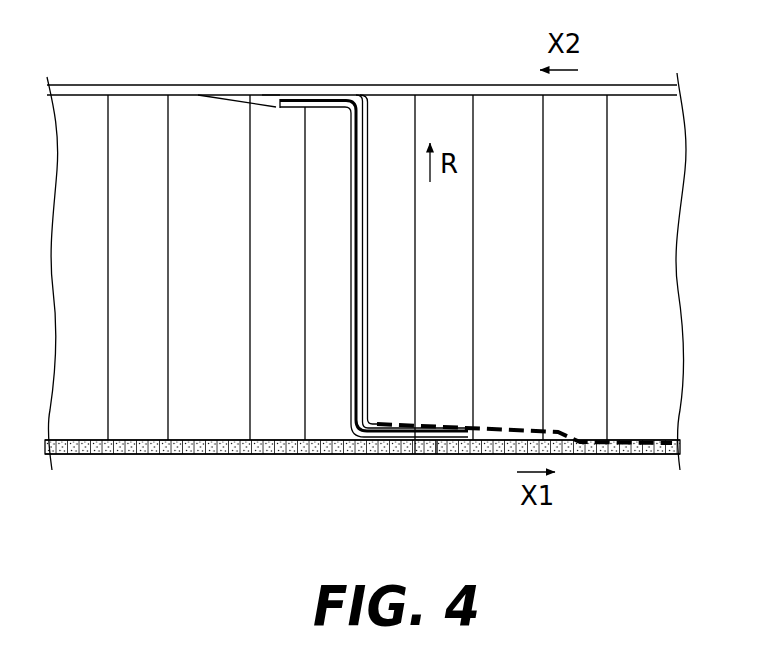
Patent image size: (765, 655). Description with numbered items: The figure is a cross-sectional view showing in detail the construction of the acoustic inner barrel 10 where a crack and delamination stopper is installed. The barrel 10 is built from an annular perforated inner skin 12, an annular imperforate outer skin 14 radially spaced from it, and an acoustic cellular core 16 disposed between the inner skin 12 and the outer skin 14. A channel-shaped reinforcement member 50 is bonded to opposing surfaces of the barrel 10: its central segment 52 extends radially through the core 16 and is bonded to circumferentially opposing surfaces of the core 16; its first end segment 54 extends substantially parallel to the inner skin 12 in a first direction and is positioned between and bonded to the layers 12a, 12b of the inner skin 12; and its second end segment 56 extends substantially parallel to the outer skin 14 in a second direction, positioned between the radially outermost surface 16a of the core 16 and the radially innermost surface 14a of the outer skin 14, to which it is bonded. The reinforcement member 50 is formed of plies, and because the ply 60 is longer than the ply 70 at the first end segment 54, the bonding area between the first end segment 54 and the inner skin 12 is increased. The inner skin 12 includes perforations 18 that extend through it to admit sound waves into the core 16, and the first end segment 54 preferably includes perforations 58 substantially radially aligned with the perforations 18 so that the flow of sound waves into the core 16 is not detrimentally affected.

The acoustic inner barrel 10 is at (464, 62).
The inner skin 12 is at (455, 455).
The layer of the inner skin 12a is at (502, 432).
The layer of the inner skin 12b is at (495, 455).
The outer skin 14 is at (247, 85).
The radially innermost surface of the outer skin 14a is at (269, 93).
The acoustic cellular core 16 is at (221, 327).
The radially outermost surface of the core 16a is at (256, 110).
The perforations 18 is at (529, 432).
The reinforcement member 50 is at (376, 260).
The central segment 52 is at (362, 253).
The first end segment 54 is at (396, 418).
The second end segment 56 is at (318, 94).
The perforations 58 is at (437, 441).
The ply 60 is at (352, 282).
The ply 70 is at (370, 293).